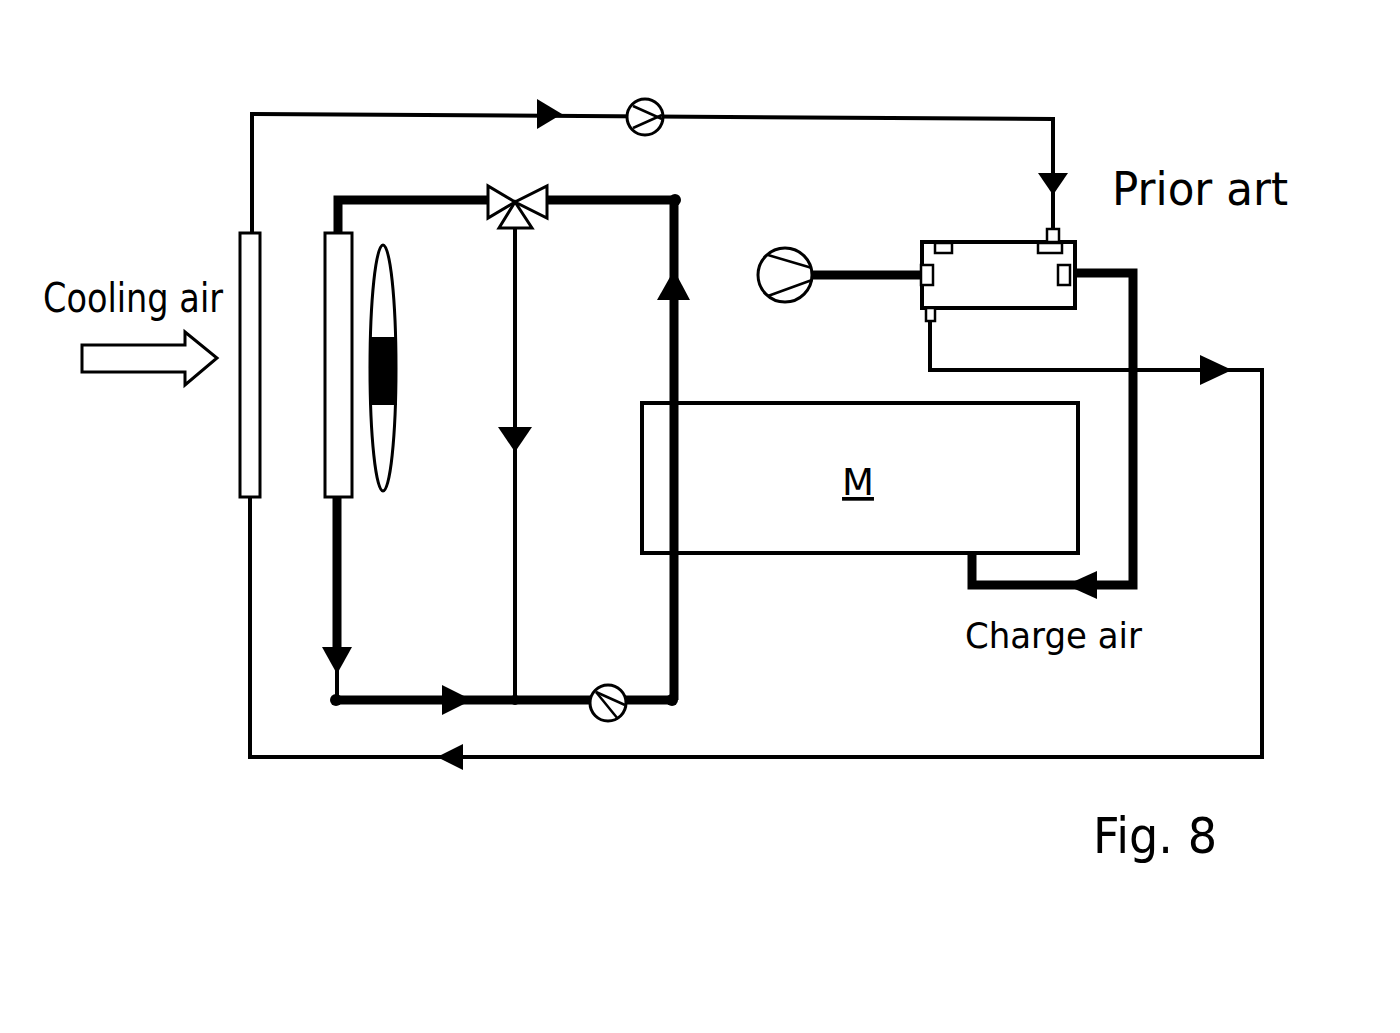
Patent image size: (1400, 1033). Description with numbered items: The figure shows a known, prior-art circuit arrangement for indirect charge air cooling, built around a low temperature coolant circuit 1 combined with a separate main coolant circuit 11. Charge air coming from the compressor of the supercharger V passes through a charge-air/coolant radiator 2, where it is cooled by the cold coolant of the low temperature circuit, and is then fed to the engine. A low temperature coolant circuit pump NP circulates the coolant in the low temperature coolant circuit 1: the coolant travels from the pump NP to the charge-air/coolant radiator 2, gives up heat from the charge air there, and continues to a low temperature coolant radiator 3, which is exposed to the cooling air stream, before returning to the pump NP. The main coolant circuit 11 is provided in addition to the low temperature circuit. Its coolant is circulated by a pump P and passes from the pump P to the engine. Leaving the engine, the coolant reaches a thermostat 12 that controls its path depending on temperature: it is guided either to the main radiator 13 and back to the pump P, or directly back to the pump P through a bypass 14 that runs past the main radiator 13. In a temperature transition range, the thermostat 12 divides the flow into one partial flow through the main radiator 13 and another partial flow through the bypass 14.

The low temperature coolant circuit 1 is at (1285, 667).
The charge-air/coolant radiator 2 is at (967, 240).
The low temperature coolant radiator 3 is at (240, 415).
The main coolant circuit 11 is at (700, 644).
The thermostat 12 is at (493, 195).
The main radiator 13 is at (332, 472).
The bypass 14 is at (525, 347).
The low temperature coolant circuit pump NP is at (656, 111).
The supercharger V is at (786, 246).
The pump P is at (605, 688).